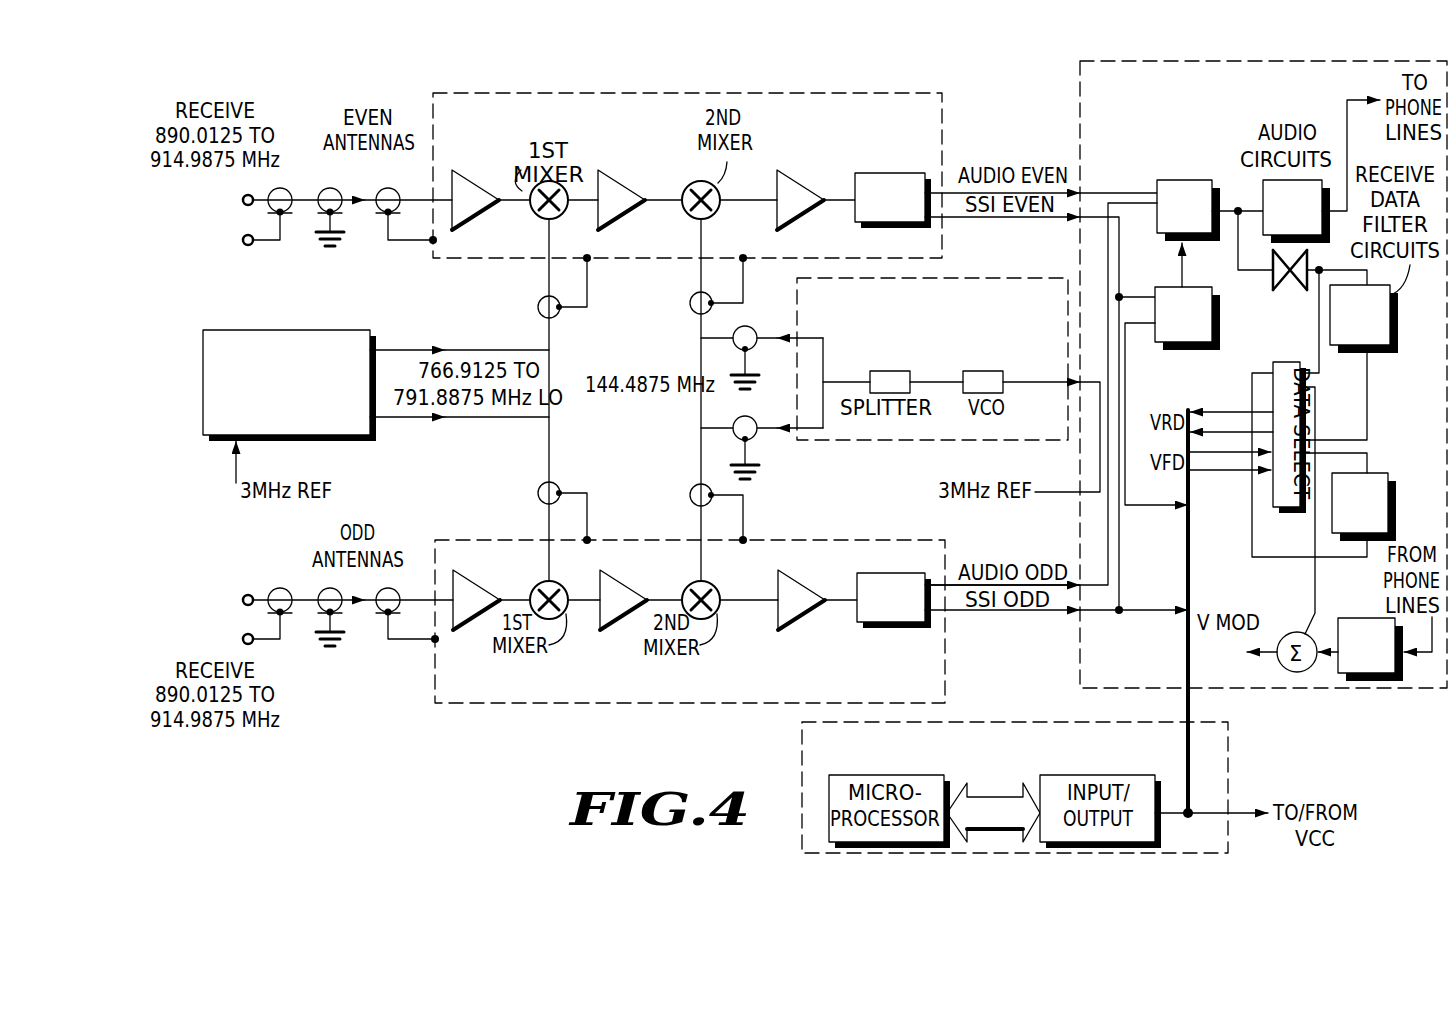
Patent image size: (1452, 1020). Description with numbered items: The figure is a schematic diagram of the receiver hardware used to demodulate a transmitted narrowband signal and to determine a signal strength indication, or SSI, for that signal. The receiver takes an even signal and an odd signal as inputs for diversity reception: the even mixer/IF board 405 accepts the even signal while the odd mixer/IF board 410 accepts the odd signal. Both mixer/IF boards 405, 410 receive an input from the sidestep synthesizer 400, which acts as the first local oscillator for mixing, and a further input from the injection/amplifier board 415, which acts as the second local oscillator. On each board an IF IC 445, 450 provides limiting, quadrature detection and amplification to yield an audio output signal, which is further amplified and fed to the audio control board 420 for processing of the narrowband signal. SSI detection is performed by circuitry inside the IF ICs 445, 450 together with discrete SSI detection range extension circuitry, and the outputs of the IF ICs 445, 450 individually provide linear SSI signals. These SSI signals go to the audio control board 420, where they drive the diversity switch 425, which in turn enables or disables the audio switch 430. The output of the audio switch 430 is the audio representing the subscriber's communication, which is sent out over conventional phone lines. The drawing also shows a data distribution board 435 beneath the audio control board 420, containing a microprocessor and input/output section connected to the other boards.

The sidestep synthesizer 400 is at (318, 330).
The even mixer/IF board 405 is at (848, 93).
The odd mixer/IF board 410 is at (948, 648).
The injection/amplifier board 415 is at (1003, 278).
The audio control board 420 is at (1080, 72).
The diversity switch 425 is at (1205, 307).
The audio switch 430 is at (1157, 180).
The data distribution board 435 is at (1030, 853).
The IF IC 445 is at (913, 173).
The IF IC 450 is at (905, 628).